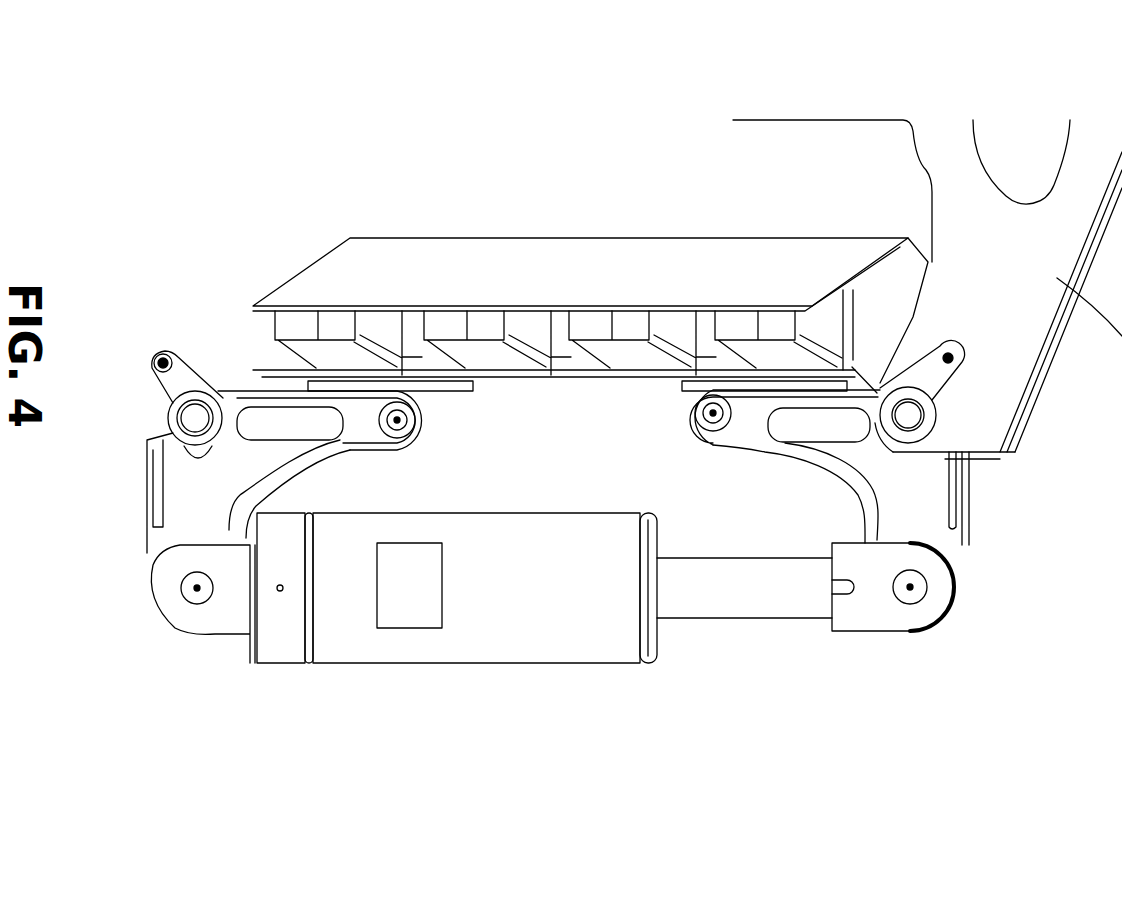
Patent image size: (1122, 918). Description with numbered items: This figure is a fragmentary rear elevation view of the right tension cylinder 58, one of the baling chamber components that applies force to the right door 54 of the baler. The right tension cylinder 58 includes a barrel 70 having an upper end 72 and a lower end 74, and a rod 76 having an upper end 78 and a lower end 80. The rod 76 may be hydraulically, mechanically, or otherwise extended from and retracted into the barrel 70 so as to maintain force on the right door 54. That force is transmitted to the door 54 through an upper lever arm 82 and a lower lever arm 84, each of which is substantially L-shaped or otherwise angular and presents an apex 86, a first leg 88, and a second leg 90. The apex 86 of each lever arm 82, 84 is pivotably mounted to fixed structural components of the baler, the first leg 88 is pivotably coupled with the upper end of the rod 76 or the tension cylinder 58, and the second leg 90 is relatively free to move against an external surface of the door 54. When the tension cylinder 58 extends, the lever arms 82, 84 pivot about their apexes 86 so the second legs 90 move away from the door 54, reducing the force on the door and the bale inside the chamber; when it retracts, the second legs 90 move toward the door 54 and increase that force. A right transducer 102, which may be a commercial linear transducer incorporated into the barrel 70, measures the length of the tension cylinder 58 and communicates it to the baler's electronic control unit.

The right door 54 is at (588, 250).
The right tension cylinder 58 is at (700, 780).
The barrel 70 is at (476, 631).
The upper end of barrel 72 is at (627, 653).
The lower end of barrel 74 is at (335, 652).
The rod 76 is at (740, 603).
The upper end of rod 78 is at (808, 607).
The lower end of rod 80 is at (670, 603).
The upper lever arm 82 is at (1010, 612).
The lower lever arm 84 is at (222, 332).
The apex 86 is at (938, 472).
The first leg 88 is at (953, 630).
The second leg 90 is at (682, 429).
The right transducer 102 is at (407, 613).